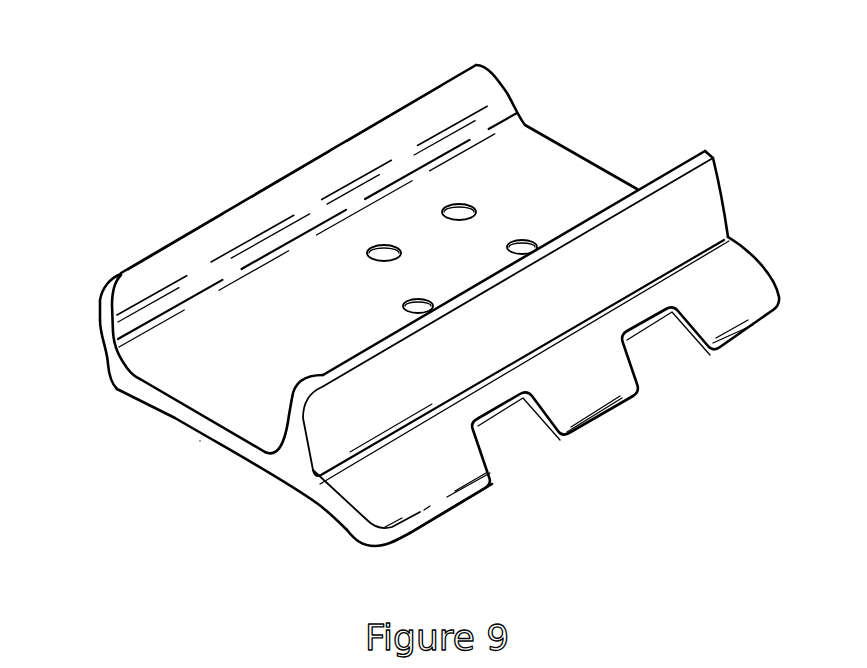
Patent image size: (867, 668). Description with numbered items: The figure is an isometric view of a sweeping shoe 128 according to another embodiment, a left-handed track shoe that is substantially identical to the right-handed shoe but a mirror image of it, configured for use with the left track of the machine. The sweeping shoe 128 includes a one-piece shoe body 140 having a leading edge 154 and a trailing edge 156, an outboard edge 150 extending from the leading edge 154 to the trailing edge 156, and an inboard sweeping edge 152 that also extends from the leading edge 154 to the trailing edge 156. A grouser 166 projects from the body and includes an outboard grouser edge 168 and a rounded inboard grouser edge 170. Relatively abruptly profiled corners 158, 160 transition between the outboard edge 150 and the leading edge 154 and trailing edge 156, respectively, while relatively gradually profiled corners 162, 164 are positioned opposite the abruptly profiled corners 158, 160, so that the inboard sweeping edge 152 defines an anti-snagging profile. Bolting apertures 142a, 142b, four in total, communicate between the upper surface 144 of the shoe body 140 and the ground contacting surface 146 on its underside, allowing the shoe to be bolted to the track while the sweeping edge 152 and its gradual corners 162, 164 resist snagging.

The sweeping shoe 128 is at (433, 295).
The one-piece shoe body 140 is at (192, 404).
The bolting apertures 142a is at (527, 231).
The bolting apertures 142b is at (386, 245).
The upper surface 144 is at (261, 468).
The ground contacting surface 146 is at (161, 375).
The outboard edge 150 is at (588, 158).
The inboard sweeping edge 152 is at (200, 441).
The leading edge 154 is at (464, 500).
The trailing edge 156 is at (219, 214).
The abruptly profiled corner 158 is at (815, 293).
The abruptly profiled corner 160 is at (483, 60).
The gradually profiled corner 162 is at (355, 545).
The gradually profiled corner 164 is at (102, 286).
The grouser 166 is at (349, 357).
The outboard grouser edge 168 is at (706, 148).
The rounded inboard grouser edge 170 is at (292, 425).